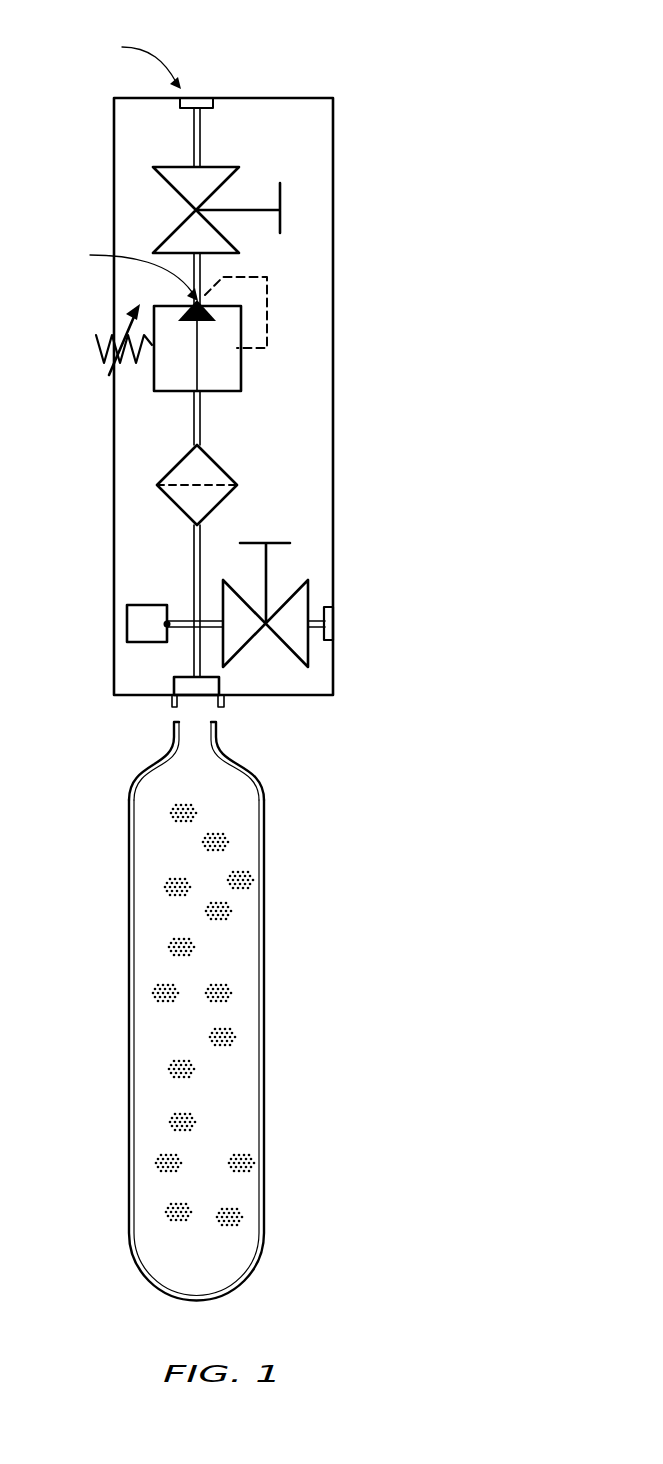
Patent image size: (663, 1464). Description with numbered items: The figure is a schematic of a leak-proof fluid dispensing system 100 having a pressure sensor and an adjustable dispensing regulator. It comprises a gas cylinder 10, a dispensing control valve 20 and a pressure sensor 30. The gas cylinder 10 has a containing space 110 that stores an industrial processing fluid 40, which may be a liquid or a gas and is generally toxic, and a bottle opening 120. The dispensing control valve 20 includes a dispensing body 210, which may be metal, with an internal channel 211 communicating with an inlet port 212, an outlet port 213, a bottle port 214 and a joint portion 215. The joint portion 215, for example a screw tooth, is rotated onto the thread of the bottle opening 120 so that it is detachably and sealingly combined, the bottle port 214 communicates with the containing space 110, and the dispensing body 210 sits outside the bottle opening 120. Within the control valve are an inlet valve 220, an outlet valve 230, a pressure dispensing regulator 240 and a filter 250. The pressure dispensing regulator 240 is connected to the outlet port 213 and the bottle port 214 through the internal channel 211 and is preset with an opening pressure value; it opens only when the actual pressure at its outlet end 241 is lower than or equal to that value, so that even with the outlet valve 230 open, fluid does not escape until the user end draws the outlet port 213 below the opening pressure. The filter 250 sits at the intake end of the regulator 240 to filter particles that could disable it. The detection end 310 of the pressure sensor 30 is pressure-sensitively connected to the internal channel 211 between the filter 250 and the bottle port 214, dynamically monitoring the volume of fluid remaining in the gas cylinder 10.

The leak-proof fluid dispensing system 100 is at (462, 36).
The dispensing control valve 20 is at (372, 318).
The dispensing body 210 is at (333, 201).
The internal channel 211 is at (190, 418).
The inlet port 212 is at (330, 624).
The outlet port 213 is at (205, 100).
The bottle port 214 is at (196, 688).
The joint portion 215 is at (224, 705).
The inlet valve 220 is at (294, 590).
The outlet valve 230 is at (168, 187).
The pressure dispensing regulator 240 is at (165, 380).
The outlet end 241 is at (190, 300).
The filter 250 is at (240, 478).
The pressure sensor 30 is at (133, 630).
The detection end 310 is at (168, 620).
The gas cylinder 10 is at (289, 990).
The containing space 110 is at (238, 1188).
The bottle opening 120 is at (222, 738).
The industrial processing fluid 40 is at (250, 880).